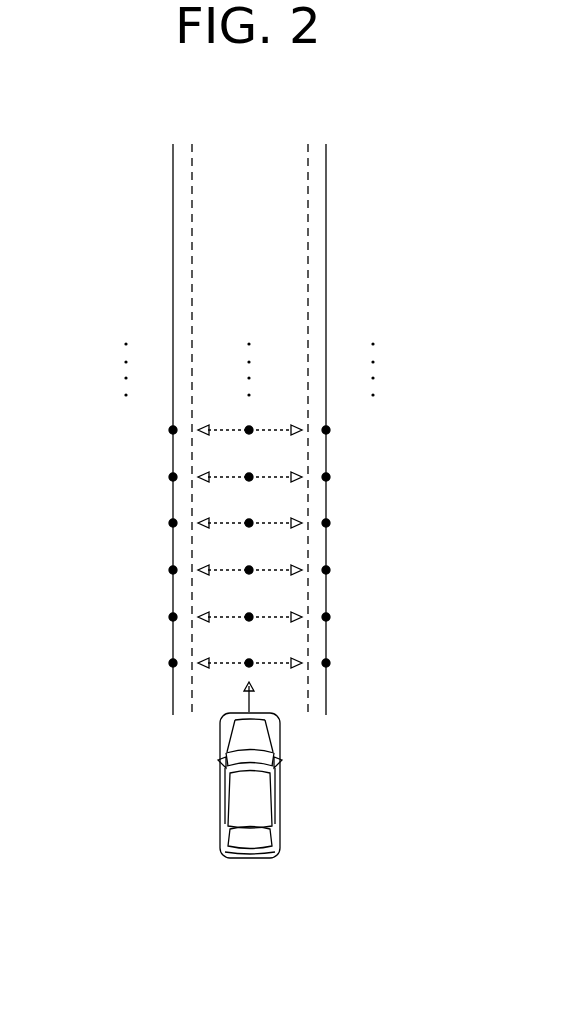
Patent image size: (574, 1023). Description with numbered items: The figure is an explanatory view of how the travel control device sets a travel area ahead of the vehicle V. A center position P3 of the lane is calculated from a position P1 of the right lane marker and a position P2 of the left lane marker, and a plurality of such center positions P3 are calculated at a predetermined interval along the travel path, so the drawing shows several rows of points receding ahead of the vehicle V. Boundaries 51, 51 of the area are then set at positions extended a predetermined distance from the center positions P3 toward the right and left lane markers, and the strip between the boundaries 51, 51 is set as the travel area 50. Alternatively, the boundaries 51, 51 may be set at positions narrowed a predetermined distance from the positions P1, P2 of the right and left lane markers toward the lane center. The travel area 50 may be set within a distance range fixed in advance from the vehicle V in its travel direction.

The boundary 51 is at (189, 283).
The travel area 50 is at (266, 279).
The position of right lane marker P1 is at (330, 430).
The position of left lane marker P2 is at (168, 430).
The center position of lane P3 is at (247, 433).
The vehicle V is at (282, 787).